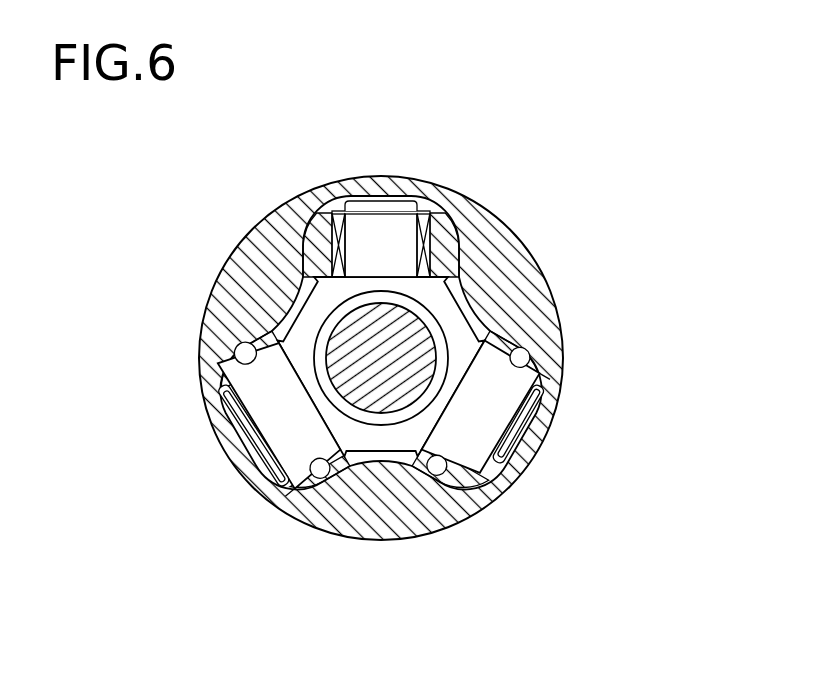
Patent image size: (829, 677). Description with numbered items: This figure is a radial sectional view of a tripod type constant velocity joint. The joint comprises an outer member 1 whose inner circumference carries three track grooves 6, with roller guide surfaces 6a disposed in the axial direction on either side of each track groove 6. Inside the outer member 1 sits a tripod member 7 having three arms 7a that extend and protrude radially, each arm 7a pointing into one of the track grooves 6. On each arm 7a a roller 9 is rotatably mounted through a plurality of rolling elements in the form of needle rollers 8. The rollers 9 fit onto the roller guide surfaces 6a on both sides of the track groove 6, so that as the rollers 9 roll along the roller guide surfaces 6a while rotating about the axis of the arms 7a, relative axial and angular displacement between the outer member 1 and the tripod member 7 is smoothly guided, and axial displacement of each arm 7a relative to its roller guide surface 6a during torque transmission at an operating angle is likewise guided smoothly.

The outer member 1 is at (522, 255).
The track groove 6 is at (433, 213).
The roller guide surface 6a is at (240, 350).
The tripod member 7 is at (455, 330).
The arm 7a is at (385, 200).
The needle roller 8 is at (340, 206).
The roller 9 is at (500, 235).